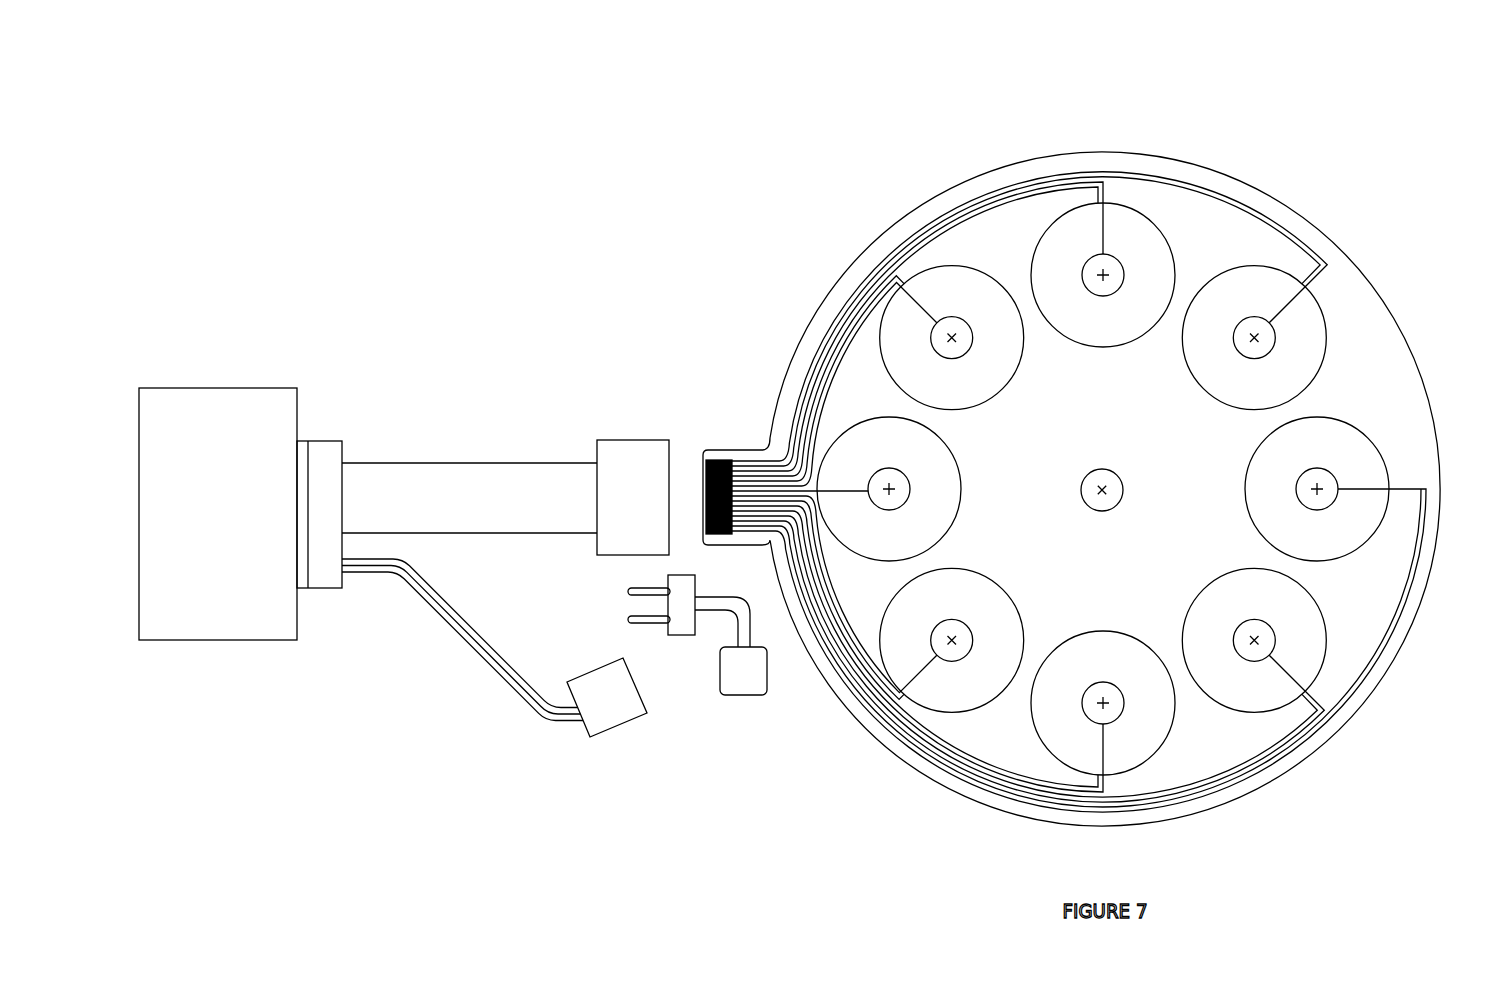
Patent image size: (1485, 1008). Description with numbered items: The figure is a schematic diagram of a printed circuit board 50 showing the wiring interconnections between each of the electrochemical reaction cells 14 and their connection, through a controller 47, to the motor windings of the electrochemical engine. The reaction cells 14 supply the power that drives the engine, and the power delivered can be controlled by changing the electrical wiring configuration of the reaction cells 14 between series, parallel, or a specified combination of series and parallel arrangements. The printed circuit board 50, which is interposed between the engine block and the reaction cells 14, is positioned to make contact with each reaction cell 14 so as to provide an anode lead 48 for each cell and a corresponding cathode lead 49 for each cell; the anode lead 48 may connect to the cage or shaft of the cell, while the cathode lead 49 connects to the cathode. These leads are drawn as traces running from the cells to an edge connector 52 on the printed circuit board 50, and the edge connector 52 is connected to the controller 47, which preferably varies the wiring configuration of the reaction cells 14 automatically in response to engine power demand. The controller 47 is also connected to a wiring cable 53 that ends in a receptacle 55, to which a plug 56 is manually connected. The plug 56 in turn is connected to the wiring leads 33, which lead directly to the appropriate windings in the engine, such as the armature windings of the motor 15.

The electrochemical reaction cell 14 is at (1076, 238).
The motor 15 is at (754, 682).
The wiring leads 33 is at (750, 628).
The controller 47 is at (200, 519).
The anode lead 48 is at (917, 677).
The cathode lead 49 is at (1084, 630).
The printed circuit board 50 is at (1194, 163).
The edge connector 52 is at (717, 458).
The wiring cable 53 is at (477, 648).
The receptacle 55 is at (607, 728).
The plug 56 is at (680, 623).